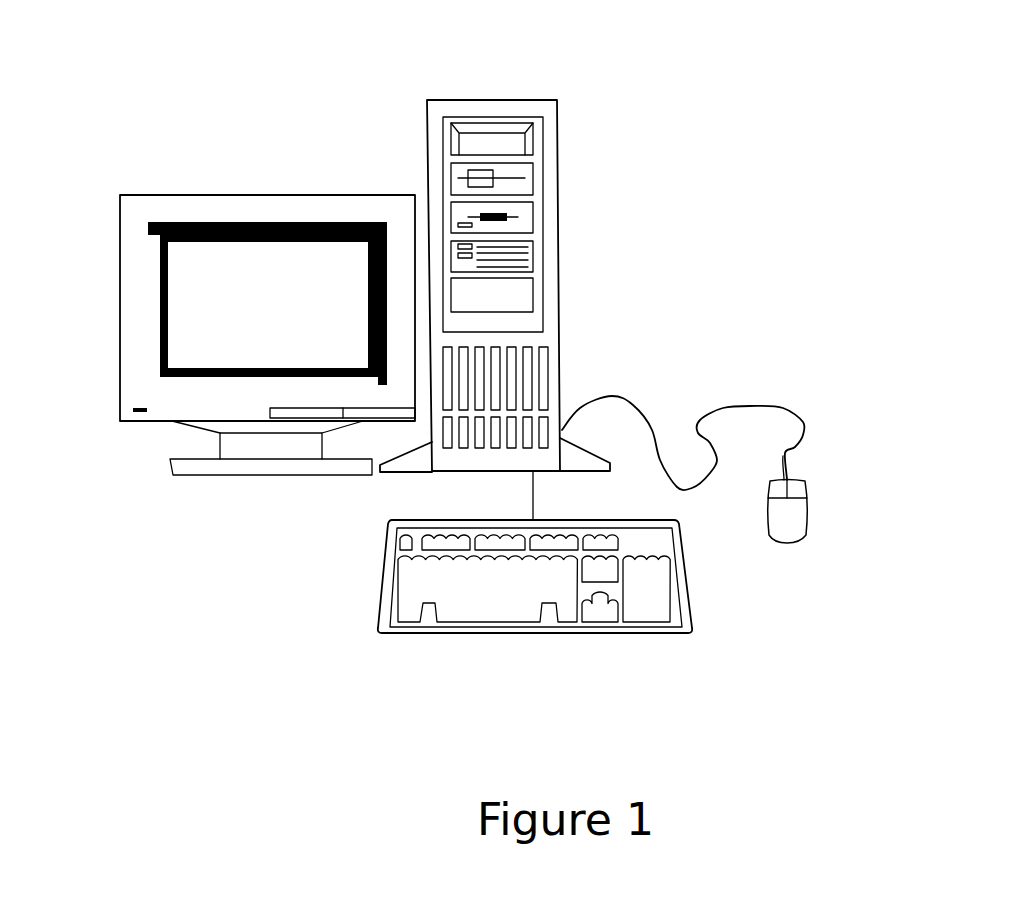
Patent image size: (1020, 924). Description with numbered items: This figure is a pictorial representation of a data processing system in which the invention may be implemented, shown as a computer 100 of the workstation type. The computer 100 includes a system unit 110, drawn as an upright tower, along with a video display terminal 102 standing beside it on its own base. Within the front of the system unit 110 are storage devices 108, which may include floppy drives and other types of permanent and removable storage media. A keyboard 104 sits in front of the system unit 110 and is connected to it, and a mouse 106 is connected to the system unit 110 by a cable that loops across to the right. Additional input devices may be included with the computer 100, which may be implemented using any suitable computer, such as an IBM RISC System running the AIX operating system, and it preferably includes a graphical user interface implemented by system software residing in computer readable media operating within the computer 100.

The computer 100 is at (685, 73).
The video display terminal 102 is at (120, 290).
The keyboard 104 is at (663, 633).
The mouse 106 is at (812, 497).
The storage devices 108 is at (528, 230).
The system unit 110 is at (560, 357).